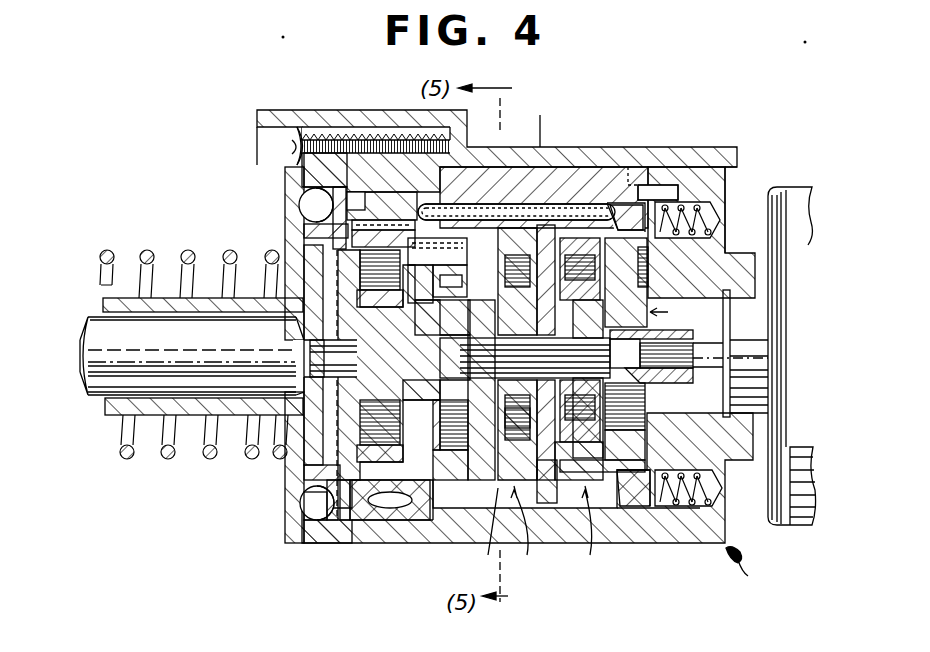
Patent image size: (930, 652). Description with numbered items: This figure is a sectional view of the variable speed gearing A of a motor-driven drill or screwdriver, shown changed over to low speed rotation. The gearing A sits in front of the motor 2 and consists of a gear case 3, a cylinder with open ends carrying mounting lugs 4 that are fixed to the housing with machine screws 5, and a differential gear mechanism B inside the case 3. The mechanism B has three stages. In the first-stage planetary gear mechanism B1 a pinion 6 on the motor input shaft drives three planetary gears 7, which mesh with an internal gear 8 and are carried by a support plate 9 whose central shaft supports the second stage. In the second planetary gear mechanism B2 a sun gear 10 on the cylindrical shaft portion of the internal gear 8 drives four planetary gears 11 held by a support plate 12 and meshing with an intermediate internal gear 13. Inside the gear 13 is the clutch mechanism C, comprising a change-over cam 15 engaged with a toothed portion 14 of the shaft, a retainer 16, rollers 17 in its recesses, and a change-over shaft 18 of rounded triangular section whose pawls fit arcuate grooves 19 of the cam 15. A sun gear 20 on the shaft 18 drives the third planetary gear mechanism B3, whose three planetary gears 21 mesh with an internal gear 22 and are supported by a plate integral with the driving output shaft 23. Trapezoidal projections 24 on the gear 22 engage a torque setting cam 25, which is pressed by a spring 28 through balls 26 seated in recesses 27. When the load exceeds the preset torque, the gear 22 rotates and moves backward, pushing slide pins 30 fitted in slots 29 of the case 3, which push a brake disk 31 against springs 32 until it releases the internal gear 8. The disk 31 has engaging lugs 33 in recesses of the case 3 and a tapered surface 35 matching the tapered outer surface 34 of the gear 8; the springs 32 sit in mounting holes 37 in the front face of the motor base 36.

The motor 2 is at (804, 190).
The gear case 3 is at (550, 543).
The mounting lugs 4 is at (392, 142).
The machine screws 5 is at (296, 146).
The pinion 6 is at (672, 330).
The planetary gears 7 is at (648, 262).
The internal gear 8 is at (600, 238).
The support plate 9 is at (606, 460).
The sun gear 10 is at (574, 320).
The planetary gears 11 is at (545, 230).
The support plate 12 is at (585, 503).
The intermediate internal gear 13 is at (515, 228).
The toothed portion 14 is at (470, 326).
The change-over cam 15 is at (482, 450).
The retainer 16 is at (400, 300).
The rollers 17 is at (448, 435).
The change-over shaft 18 is at (381, 365).
The arcuate grooves 19 is at (462, 290).
The sun gear 20 is at (415, 364).
The planetary gears 21 is at (378, 430).
The internal gear 22 is at (422, 520).
The driving output shaft 23 is at (175, 330).
The projections 24 is at (366, 200).
The torque setting cam 25 is at (345, 522).
The balls 26 is at (302, 207).
The recesses 27 is at (332, 188).
The spring 28 is at (170, 460).
The slots 29 is at (565, 205).
The slide pins 30 is at (470, 206).
The brake disk 31 is at (650, 508).
The spring 32 is at (718, 218).
The engaging lugs 33 is at (620, 190).
The tapered outer peripheral surface 34 is at (640, 500).
The tapered surface 35 is at (626, 217).
The motor base 36 is at (730, 182).
The mounting holes 37 is at (722, 205).
The variable speed gearing A is at (739, 570).
The differential gear mechanism B is at (666, 313).
The first-stage planetary gear mechanism B1 is at (594, 533).
The second planetary gear mechanism B2 is at (524, 533).
The third planetary gear mechanism B3 is at (487, 534).
The clutch mechanism C is at (390, 500).